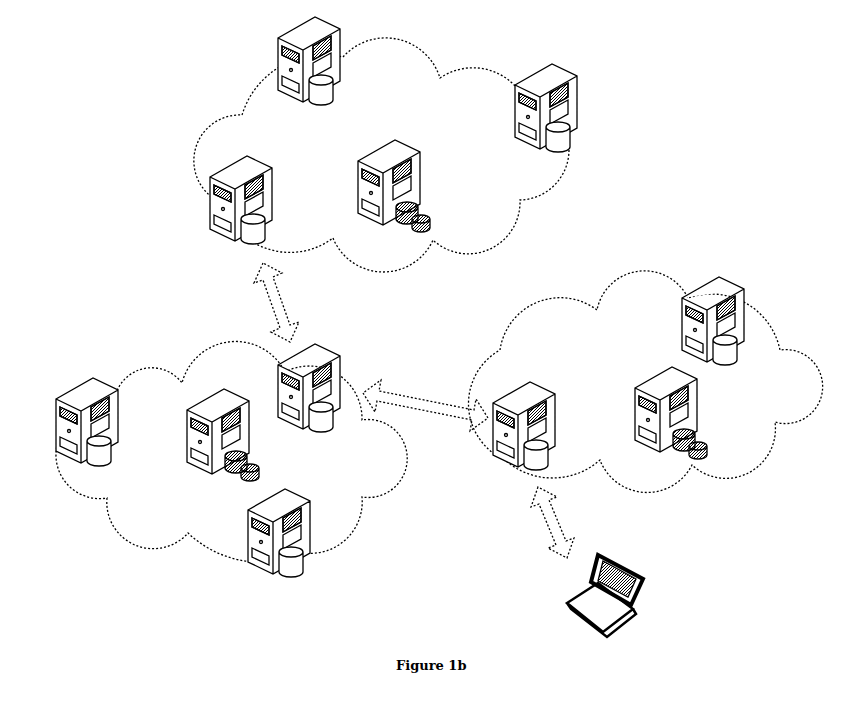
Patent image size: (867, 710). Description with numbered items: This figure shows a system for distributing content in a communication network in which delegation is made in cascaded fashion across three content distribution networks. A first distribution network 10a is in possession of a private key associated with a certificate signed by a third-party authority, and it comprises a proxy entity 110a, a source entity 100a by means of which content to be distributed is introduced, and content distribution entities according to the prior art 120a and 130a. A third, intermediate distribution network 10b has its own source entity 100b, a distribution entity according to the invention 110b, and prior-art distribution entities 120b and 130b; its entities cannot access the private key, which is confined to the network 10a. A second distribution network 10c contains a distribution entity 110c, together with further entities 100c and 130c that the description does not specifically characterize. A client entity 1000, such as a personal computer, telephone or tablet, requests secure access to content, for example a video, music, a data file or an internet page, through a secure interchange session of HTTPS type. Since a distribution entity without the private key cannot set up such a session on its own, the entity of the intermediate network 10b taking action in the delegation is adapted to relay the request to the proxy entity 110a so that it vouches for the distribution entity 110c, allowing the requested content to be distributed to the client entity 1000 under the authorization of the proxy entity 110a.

The first content distribution network 10a is at (477, 65).
The intermediate content distribution network 10b is at (203, 352).
The second distribution network 10c is at (642, 267).
The source entity 100a is at (407, 142).
The proxy entity 110a is at (256, 155).
The prior-art content distribution entity 120a is at (302, 33).
The prior-art content distribution entity 130a is at (570, 63).
The source entity 100b is at (187, 412).
The content distribution entity 110b is at (333, 348).
The prior-art content distribution entity 120b is at (292, 489).
The prior-art content distribution entity 130b is at (80, 377).
The database server 100c is at (641, 380).
The distribution entity 110c is at (541, 383).
The server 130c is at (737, 278).
The client entity 1000 is at (628, 558).